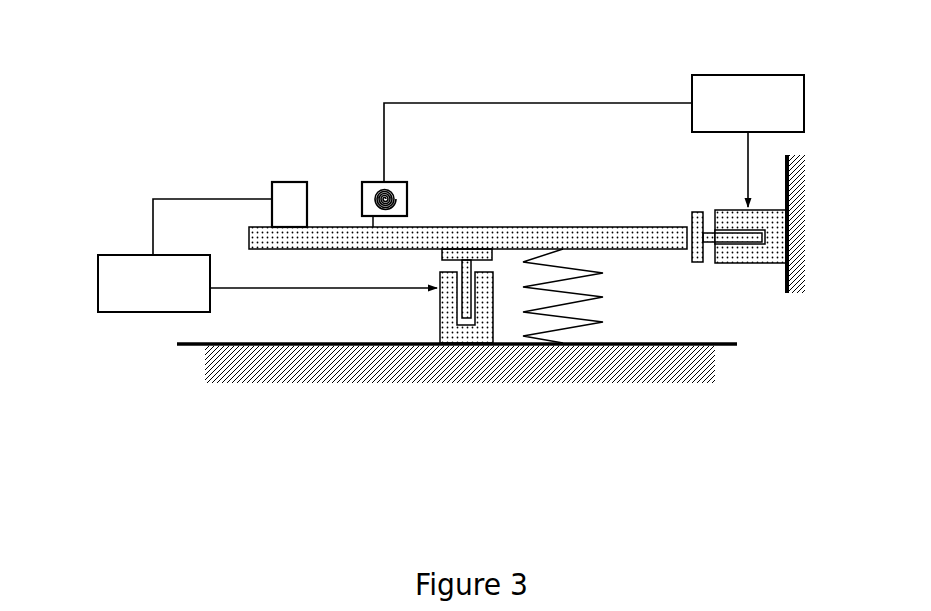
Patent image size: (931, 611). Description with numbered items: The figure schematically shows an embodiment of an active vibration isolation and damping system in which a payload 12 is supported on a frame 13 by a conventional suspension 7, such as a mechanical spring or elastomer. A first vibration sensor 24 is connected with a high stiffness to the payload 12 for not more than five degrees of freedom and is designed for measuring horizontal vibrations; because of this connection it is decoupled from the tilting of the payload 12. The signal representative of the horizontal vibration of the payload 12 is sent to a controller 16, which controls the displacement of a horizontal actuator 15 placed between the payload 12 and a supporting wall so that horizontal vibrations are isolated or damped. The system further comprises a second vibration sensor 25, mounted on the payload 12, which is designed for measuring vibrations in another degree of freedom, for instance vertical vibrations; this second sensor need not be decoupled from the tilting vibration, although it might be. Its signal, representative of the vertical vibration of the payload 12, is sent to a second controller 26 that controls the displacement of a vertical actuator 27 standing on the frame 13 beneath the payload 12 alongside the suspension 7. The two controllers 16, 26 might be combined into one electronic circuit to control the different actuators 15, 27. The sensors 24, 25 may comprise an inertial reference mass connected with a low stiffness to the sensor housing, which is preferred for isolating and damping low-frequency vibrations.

The suspension 7 is at (603, 292).
The payload 12 is at (475, 224).
The frame 13 is at (201, 364).
The horizontal actuator 15 is at (700, 266).
The controller 16 is at (749, 72).
The first vibration sensor 24 is at (357, 200).
The second vibration sensor 25 is at (286, 179).
The controller 26 is at (95, 283).
The vertical actuator 27 is at (463, 324).